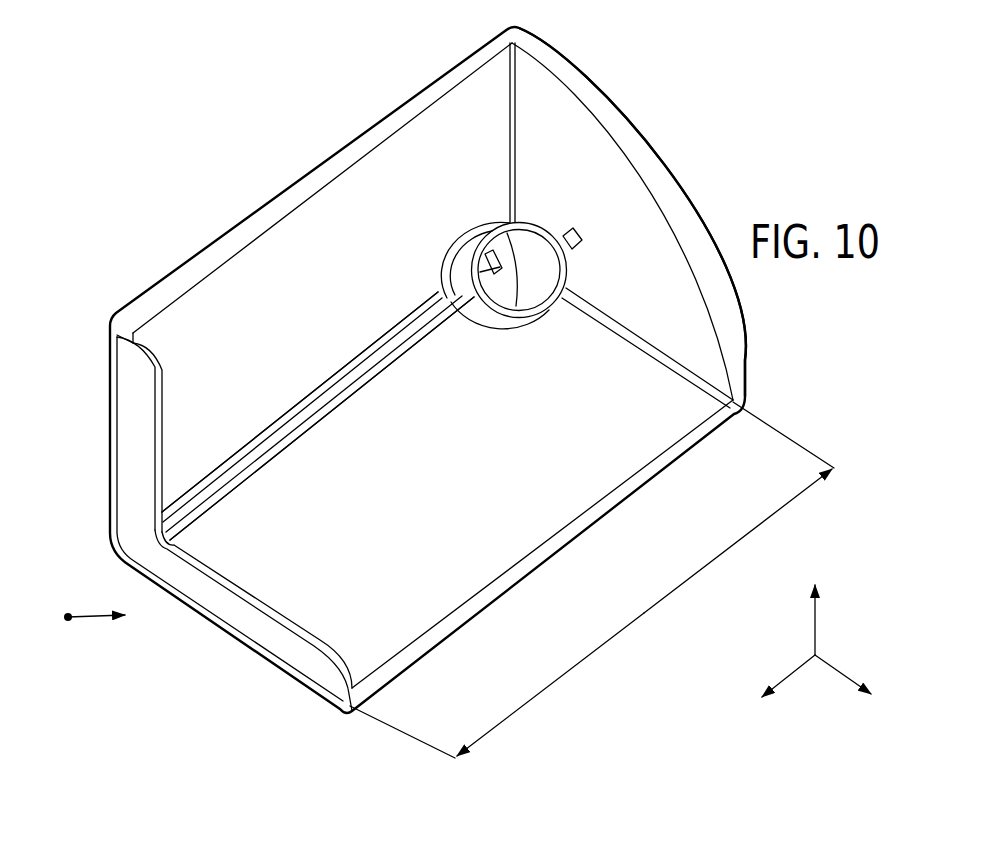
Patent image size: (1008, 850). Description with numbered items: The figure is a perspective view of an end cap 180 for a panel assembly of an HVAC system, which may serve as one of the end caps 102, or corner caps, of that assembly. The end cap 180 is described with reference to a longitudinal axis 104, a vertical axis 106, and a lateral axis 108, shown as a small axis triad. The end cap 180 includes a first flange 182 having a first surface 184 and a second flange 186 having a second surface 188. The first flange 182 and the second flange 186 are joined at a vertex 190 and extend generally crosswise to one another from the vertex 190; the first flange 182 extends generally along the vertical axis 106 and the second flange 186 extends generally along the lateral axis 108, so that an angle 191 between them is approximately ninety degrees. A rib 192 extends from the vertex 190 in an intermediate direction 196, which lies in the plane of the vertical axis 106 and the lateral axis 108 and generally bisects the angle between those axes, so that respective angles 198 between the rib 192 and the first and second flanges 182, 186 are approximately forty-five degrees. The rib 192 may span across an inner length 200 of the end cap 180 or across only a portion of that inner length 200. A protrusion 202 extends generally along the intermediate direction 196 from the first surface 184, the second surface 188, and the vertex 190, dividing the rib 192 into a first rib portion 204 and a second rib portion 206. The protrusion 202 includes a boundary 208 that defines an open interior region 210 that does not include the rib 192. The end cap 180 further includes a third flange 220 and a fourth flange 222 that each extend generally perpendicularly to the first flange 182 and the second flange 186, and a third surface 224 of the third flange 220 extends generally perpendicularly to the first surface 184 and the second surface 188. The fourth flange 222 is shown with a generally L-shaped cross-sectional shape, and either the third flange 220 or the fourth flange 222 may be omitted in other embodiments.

The end caps 102 is at (204, 60).
The end cap 180 is at (428, 370).
The first flange 182 is at (178, 290).
The first surface 184 is at (257, 261).
The second flange 186 is at (465, 617).
The second surface 188 is at (530, 528).
The vertex 190 is at (172, 488).
The angle 191 is at (298, 377).
The rib 192 is at (208, 510).
The intermediate direction 196 is at (92, 620).
The angles 198 is at (402, 342).
The inner length 200 is at (553, 683).
The protrusion 202 is at (546, 225).
The first rib portion 204 is at (253, 470).
The second rib portion 206 is at (578, 248).
The boundary 208 is at (484, 249).
The open interior region 210 is at (546, 262).
The third flange 220 is at (724, 315).
The fourth flange 222 is at (276, 636).
The third surface 224 is at (674, 243).
The longitudinal axis 104 is at (790, 670).
The vertical axis 106 is at (815, 625).
The lateral axis 108 is at (837, 673).